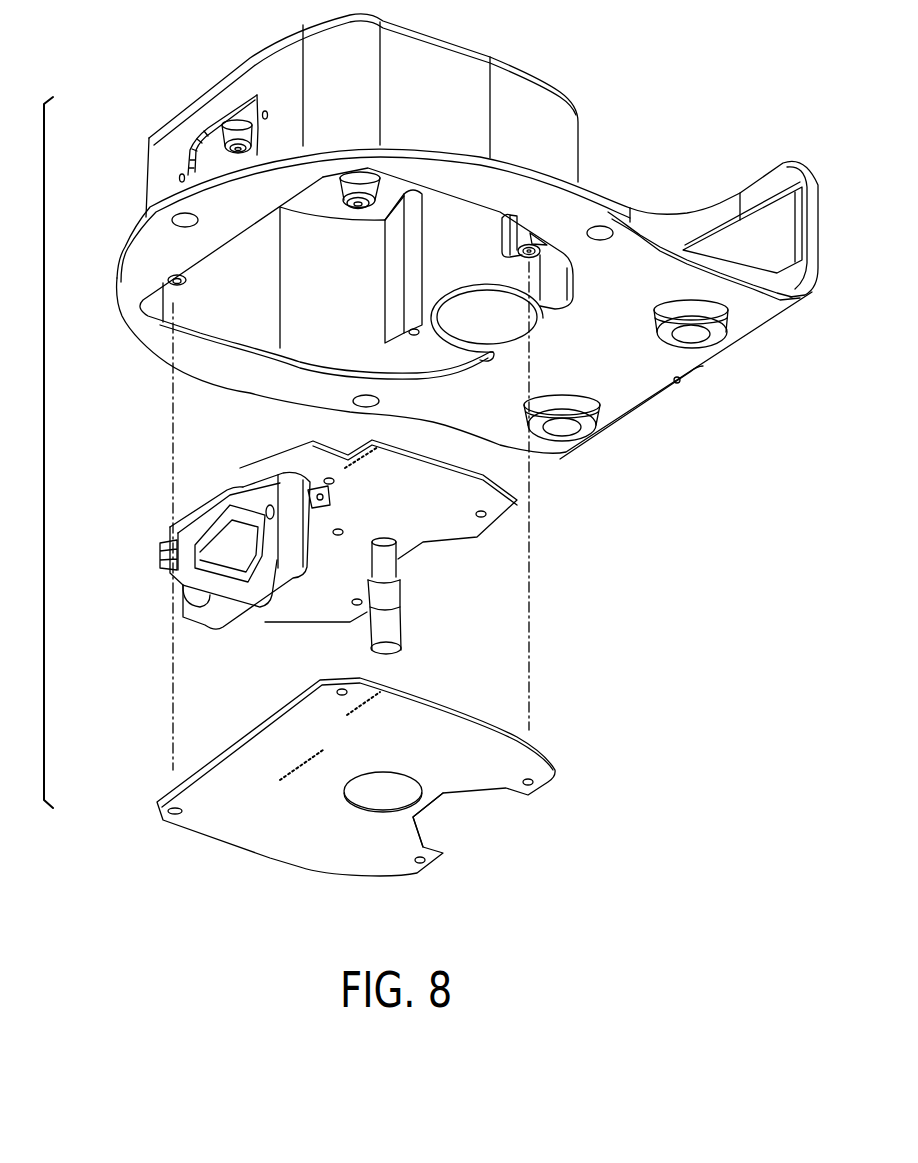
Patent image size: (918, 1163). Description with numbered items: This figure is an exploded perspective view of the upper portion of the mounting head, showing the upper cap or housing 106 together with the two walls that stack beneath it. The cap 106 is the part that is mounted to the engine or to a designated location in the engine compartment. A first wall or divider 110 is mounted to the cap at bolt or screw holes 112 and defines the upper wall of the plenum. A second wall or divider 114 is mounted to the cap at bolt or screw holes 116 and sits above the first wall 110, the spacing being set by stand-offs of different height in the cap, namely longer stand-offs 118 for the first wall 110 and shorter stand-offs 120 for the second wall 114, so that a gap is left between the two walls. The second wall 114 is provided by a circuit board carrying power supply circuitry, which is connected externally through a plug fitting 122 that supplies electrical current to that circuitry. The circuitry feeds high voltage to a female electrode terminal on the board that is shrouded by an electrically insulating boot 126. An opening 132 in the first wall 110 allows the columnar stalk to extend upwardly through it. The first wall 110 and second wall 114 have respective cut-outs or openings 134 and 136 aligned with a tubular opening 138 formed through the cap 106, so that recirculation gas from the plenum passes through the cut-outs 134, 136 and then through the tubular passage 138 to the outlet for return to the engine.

The upper cap or housing 106 is at (452, 236).
The first wall or divider 110 is at (332, 797).
The bolt or screw holes 112 is at (175, 817).
The second wall or divider 114 is at (283, 606).
The bolt or screw holes 116 is at (481, 518).
The longer stand-offs 118 is at (413, 222).
The shorter stand-offs 120 is at (356, 178).
The plug fitting 122 is at (193, 515).
The electrically insulating boot 126 is at (380, 620).
The opening 132 is at (368, 800).
The cut-out or opening 134 is at (459, 812).
The cut-out or opening 136 is at (380, 533).
The tubular opening 138 is at (510, 322).